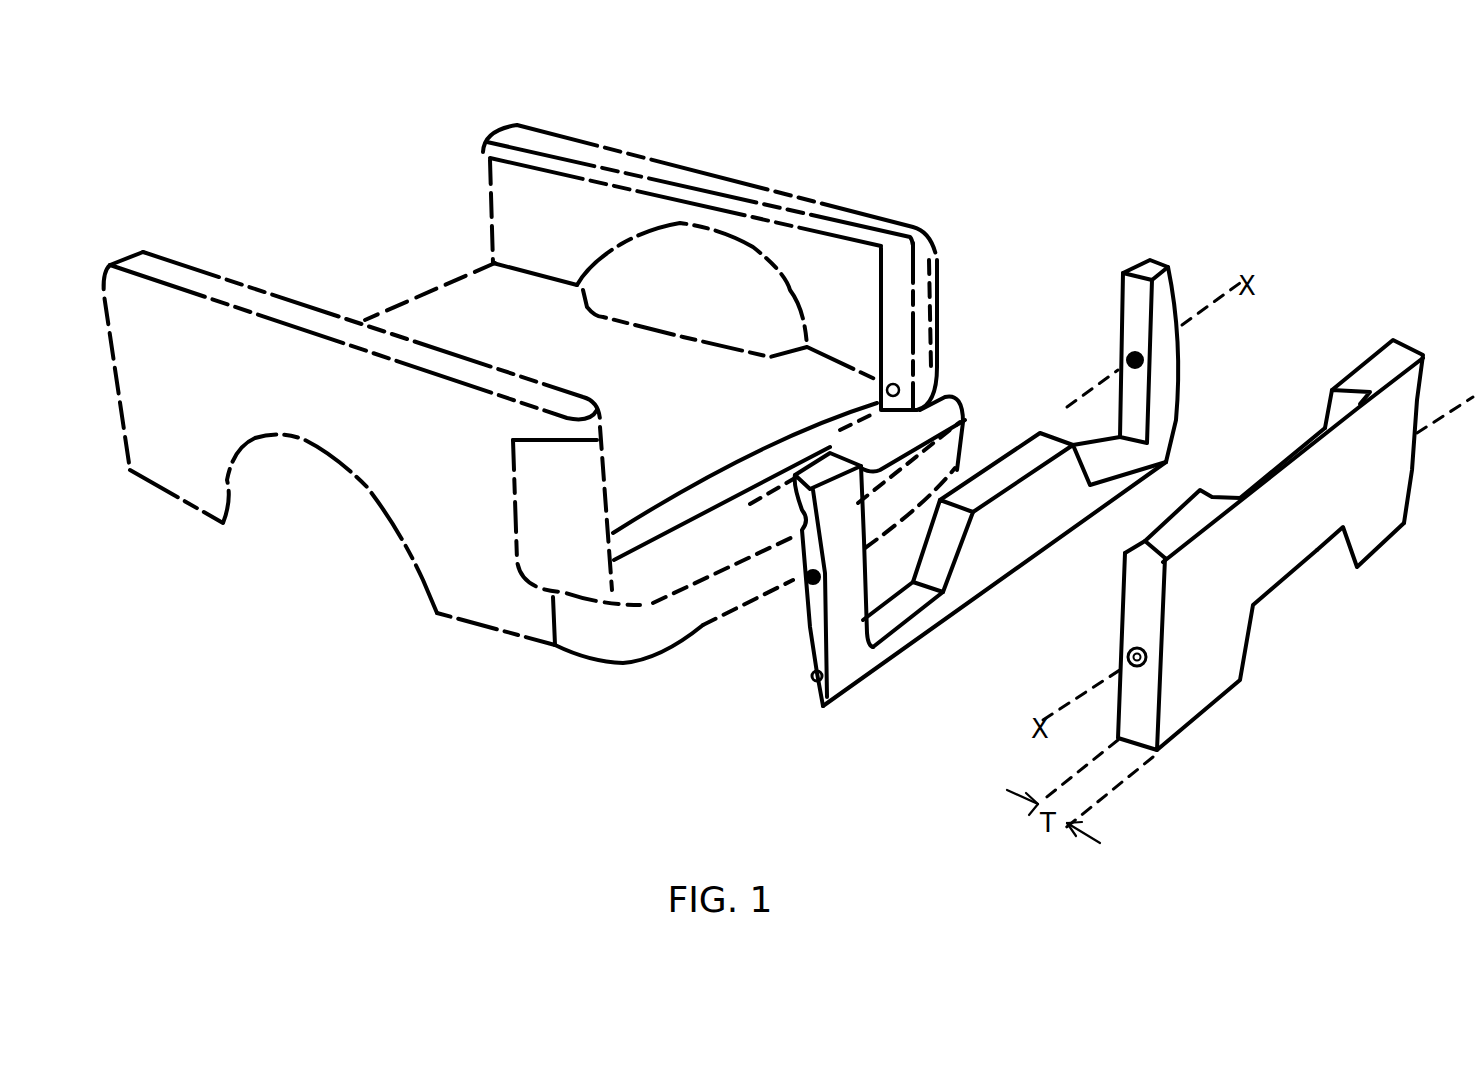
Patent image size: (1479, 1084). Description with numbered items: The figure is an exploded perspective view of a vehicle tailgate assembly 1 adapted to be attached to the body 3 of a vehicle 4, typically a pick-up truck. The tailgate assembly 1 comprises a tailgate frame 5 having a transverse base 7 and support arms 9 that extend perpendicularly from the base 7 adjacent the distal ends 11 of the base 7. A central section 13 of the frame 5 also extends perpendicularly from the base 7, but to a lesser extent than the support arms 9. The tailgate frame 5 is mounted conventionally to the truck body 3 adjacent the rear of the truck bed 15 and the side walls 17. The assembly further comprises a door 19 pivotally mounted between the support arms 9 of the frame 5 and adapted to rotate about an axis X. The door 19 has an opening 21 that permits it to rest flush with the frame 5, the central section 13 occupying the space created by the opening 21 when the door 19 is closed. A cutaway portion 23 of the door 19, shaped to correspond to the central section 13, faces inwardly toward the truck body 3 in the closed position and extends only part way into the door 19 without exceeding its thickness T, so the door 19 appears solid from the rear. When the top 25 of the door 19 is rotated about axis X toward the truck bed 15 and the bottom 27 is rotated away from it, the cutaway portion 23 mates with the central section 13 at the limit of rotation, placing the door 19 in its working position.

The vehicle tailgate assembly 1 is at (1262, 222).
The body 3 is at (453, 563).
The vehicle 4 is at (150, 540).
The tailgate frame 5 is at (843, 718).
The transverse base 7 is at (918, 650).
The support arms 9 is at (1157, 358).
The distal ends 11 is at (1163, 460).
The central section 13 is at (1022, 460).
The truck bed 15 is at (621, 323).
The side walls 17 is at (703, 168).
The door 19 is at (1183, 733).
The opening 21 is at (1290, 600).
The cutaway portion 23 is at (1325, 398).
The top 25 is at (1382, 368).
The bottom 27 is at (1387, 540).